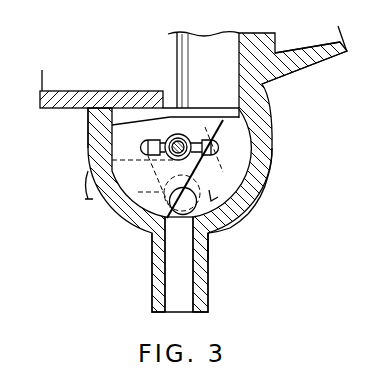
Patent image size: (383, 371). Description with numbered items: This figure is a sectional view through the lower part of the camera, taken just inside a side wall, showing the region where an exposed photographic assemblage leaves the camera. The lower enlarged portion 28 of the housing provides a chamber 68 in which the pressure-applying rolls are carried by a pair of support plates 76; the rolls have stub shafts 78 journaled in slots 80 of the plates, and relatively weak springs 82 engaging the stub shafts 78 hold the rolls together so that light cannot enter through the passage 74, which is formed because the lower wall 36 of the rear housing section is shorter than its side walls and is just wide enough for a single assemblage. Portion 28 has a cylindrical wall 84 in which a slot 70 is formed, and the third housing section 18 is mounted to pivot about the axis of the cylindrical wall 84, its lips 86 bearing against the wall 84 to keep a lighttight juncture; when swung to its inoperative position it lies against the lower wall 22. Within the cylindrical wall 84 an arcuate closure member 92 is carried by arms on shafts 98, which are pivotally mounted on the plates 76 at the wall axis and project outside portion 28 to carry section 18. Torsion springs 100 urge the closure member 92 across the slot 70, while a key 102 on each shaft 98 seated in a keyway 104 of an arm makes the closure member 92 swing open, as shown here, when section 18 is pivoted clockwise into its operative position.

The third housing section 18 is at (146, 305).
The lower wall 22 is at (300, 49).
The lower enlarged portion 28 is at (113, 232).
The lower wall 36 is at (97, 90).
The chamber 68 is at (259, 207).
The slot 70 is at (172, 248).
The passage 74 is at (177, 93).
The support plates 76 is at (262, 176).
The stub shafts 78 is at (240, 110).
The slots 80 is at (222, 141).
The springs 82 is at (225, 231).
The cylindrical wall 84 is at (249, 212).
The lips 86 is at (212, 238).
The closure member 92 is at (107, 216).
The shafts 98 is at (180, 134).
The torsion springs 100 is at (142, 147).
The key 102 is at (166, 119).
The keyway 104 is at (220, 153).